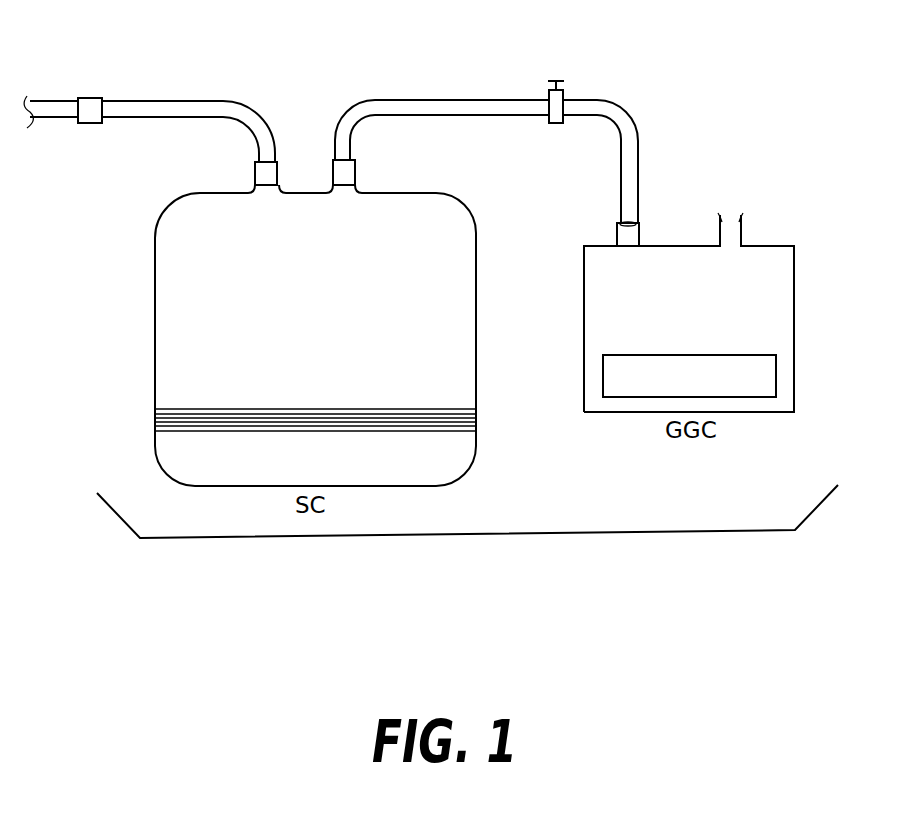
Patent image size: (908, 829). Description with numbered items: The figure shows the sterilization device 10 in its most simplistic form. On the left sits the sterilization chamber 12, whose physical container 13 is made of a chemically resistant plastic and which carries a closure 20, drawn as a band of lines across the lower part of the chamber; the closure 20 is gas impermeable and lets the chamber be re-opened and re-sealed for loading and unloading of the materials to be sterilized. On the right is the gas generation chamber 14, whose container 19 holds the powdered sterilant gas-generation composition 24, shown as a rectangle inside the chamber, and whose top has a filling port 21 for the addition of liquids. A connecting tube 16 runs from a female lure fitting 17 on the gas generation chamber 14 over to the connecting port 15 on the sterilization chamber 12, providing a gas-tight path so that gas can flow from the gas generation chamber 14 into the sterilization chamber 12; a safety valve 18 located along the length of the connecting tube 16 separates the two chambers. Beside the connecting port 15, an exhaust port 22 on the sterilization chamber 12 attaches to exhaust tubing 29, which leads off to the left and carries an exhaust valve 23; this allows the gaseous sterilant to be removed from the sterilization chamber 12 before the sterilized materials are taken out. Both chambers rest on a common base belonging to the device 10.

The device 10 is at (470, 535).
The sterilization chamber 12 is at (322, 308).
The physical container 13 is at (155, 315).
The gas generation chamber 14 is at (707, 315).
The connecting port 15 is at (333, 172).
The connecting tube 16 is at (515, 100).
The female lure fitting 17 is at (641, 220).
The safety valve 18 is at (549, 123).
The container 19 is at (794, 298).
The closure 20 is at (476, 412).
The filling port 21 is at (743, 220).
The exhaust port 22 is at (255, 174).
The exhaust valve 23 is at (92, 98).
The sterilant gas-generation composition 24 is at (707, 392).
The exhaust tubing 29 is at (223, 100).